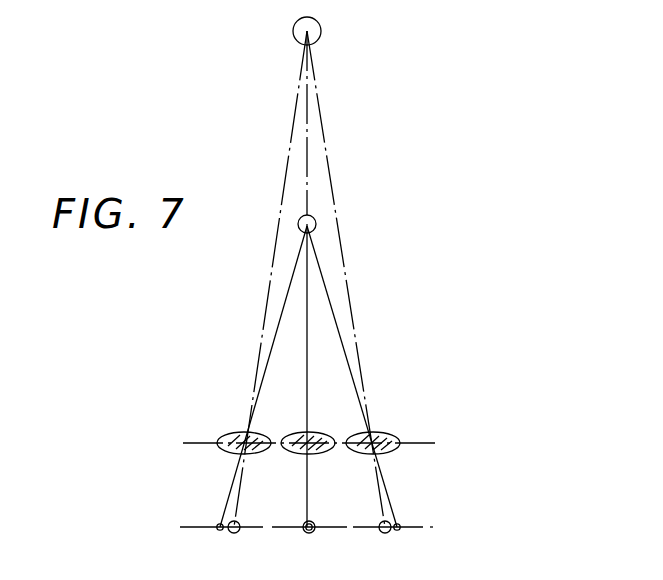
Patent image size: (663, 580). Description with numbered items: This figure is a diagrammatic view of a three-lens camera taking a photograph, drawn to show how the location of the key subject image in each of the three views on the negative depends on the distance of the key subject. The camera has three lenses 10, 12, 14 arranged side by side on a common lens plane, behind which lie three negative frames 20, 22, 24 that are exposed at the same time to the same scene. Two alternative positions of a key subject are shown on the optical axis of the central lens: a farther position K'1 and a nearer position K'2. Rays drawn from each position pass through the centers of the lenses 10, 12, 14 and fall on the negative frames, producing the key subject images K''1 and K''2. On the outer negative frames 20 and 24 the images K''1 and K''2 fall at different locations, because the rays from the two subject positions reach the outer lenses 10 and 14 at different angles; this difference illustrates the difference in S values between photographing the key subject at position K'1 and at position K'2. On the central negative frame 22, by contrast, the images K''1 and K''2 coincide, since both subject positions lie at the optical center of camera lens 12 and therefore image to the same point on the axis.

The camera lens 10 is at (228, 437).
The camera lens 12 is at (300, 434).
The camera lens 14 is at (385, 434).
The negative frame 20 is at (258, 525).
The negative frame 22 is at (333, 525).
The negative frame 24 is at (370, 525).
The key subject position K'1 is at (315, 272).
The key subject position K'2 is at (316, 365).
The key subject image K''1 is at (316, 547).
The key subject image K''2 is at (309, 549).